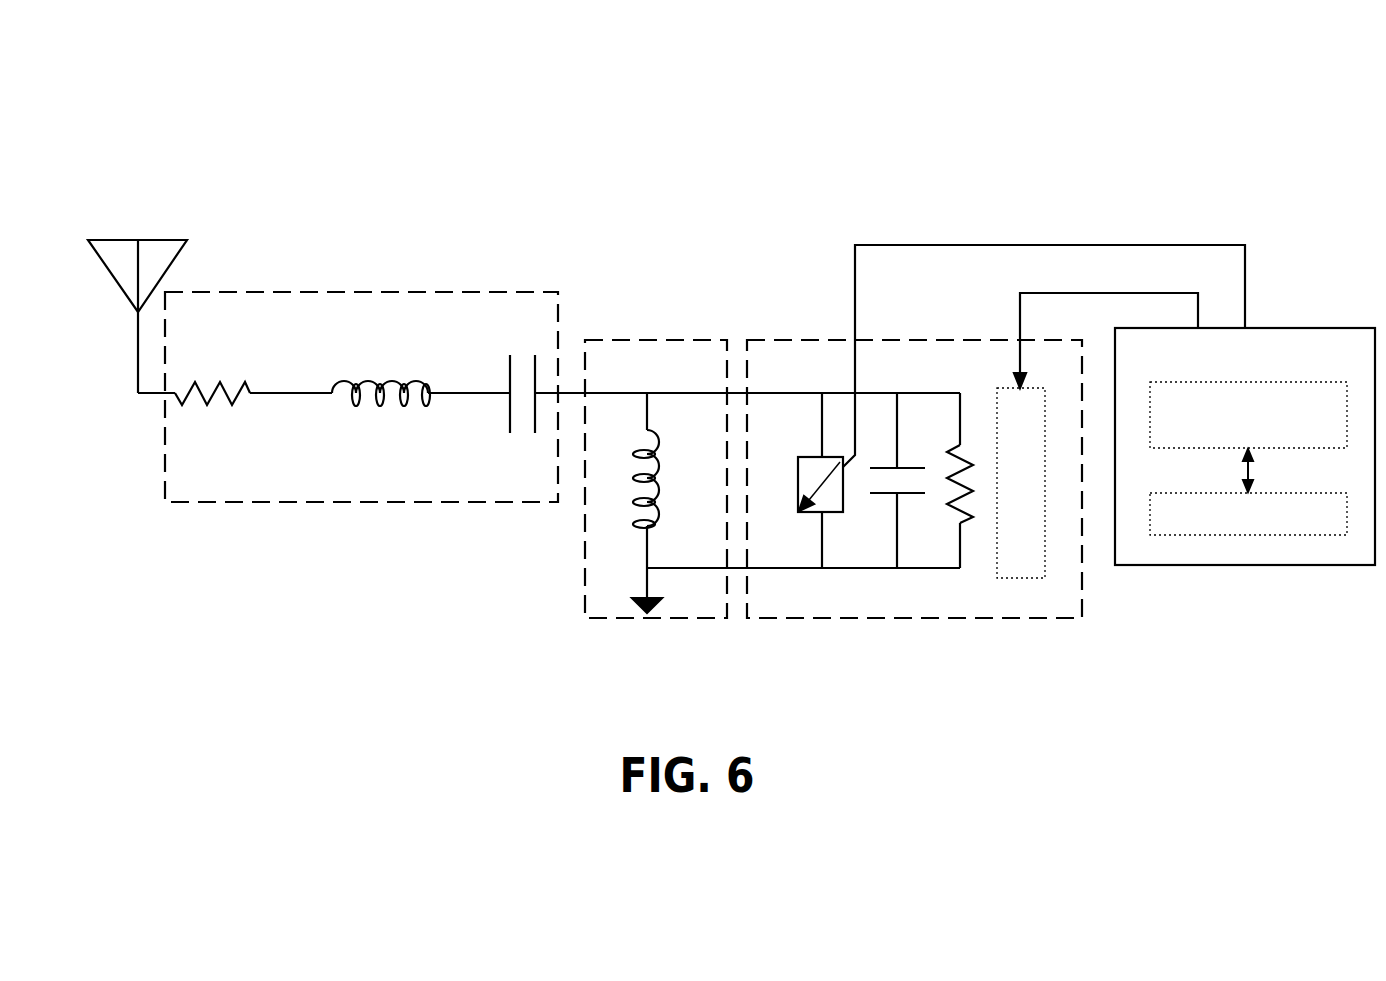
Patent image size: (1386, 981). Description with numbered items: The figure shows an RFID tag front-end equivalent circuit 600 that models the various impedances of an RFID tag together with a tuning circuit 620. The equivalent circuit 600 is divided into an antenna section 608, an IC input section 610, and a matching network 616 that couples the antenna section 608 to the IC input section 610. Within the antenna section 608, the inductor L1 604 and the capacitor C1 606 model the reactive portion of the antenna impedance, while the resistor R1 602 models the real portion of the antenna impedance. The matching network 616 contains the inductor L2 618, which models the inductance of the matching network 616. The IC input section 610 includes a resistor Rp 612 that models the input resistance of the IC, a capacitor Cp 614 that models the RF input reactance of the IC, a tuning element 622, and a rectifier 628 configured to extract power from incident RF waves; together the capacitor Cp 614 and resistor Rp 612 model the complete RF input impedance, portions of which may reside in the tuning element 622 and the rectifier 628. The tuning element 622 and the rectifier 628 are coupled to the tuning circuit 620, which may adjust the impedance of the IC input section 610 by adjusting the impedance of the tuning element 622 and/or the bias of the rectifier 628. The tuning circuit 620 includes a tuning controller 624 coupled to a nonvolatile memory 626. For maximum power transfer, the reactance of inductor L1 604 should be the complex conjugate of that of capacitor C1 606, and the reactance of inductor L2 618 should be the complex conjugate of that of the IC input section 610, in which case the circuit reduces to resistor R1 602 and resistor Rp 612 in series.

The RFID tag front-end equivalent circuit 600 is at (1032, 59).
The resistor R1 602 is at (214, 360).
The inductor L1 604 is at (367, 428).
The capacitor C1 606 is at (507, 342).
The antenna section 608 is at (419, 276).
The IC input section 610 is at (783, 325).
The resistor Rp 612 is at (942, 523).
The capacitor Cp 614 is at (920, 438).
The matching network 616 is at (663, 325).
The inductor L2 618 is at (616, 492).
The tuning circuit 620 is at (1345, 369).
The tuning element 622 is at (790, 446).
The tuning controller 624 is at (1327, 442).
The nonvolatile memory (NVM) 626 is at (1300, 526).
The rectifier 628 is at (1029, 412).